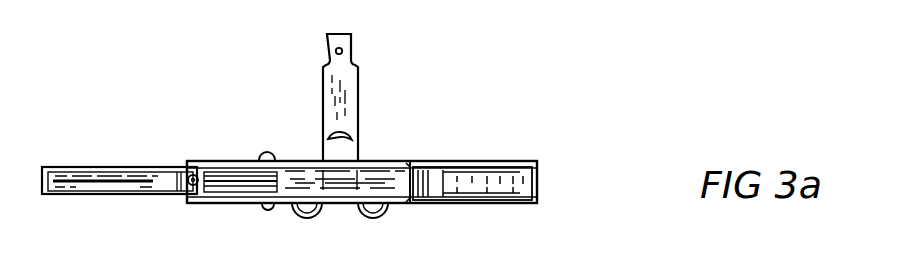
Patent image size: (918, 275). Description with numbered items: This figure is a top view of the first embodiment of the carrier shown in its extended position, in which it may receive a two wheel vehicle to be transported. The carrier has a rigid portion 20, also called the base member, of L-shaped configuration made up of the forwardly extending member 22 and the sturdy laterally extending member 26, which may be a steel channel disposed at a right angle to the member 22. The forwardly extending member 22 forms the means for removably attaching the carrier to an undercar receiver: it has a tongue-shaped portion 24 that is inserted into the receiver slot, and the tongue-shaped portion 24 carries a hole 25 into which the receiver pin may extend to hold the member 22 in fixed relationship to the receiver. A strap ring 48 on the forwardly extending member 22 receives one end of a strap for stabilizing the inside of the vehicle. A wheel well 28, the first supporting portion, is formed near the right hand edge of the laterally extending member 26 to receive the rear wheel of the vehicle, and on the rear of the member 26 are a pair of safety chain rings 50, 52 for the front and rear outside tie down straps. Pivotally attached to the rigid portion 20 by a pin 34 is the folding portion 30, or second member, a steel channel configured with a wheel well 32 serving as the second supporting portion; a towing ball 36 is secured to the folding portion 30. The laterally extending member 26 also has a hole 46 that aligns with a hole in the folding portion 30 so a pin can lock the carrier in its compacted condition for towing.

The rigid portion 20 is at (398, 160).
The forwardly extending member 22 is at (350, 108).
The tongue-shaped portion 24 is at (347, 58).
The hole 25 is at (336, 50).
The laterally extending member 26 is at (503, 205).
The wheel well 28 is at (510, 160).
The folding portion 30 is at (137, 168).
The wheel well 32 is at (60, 175).
The pin 34 is at (268, 210).
The towing ball 36 is at (190, 198).
The hole 46 is at (407, 205).
The strap ring 48 is at (335, 138).
The ring 50 is at (307, 218).
The ring 52 is at (375, 218).